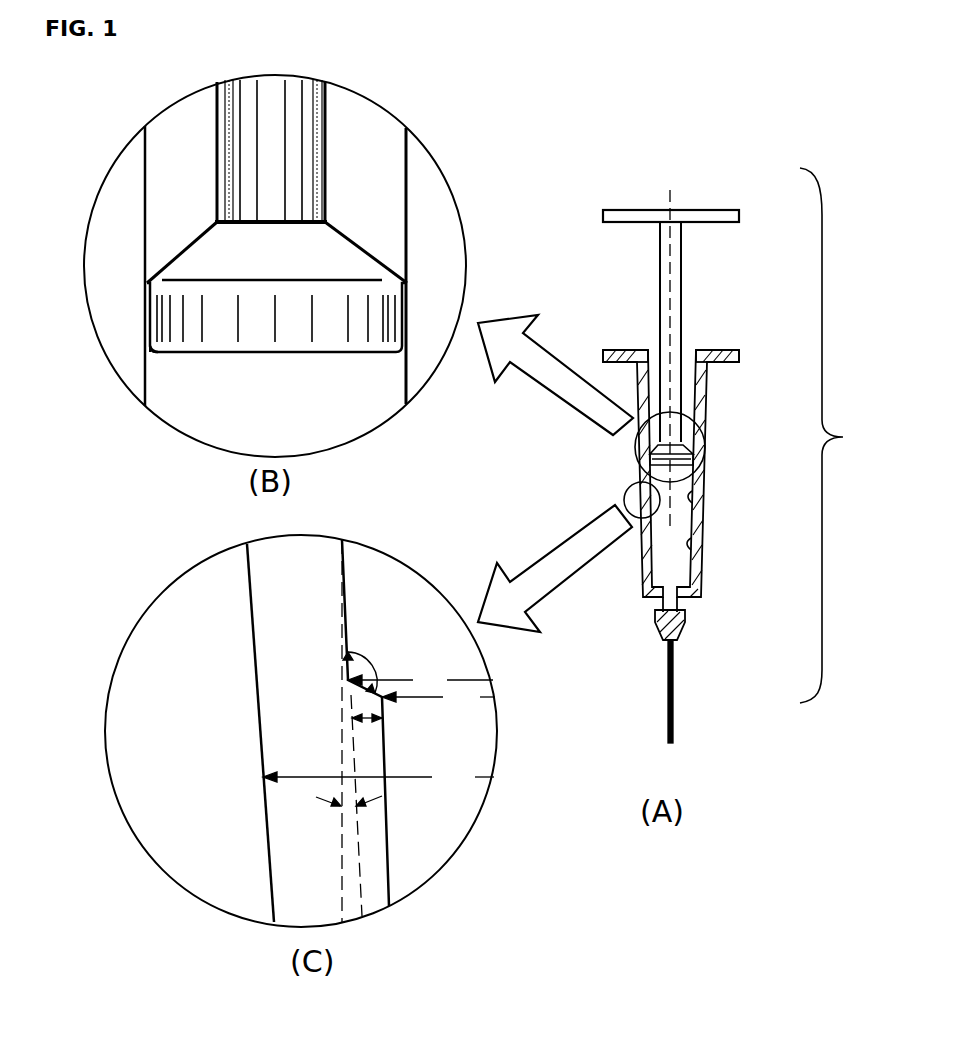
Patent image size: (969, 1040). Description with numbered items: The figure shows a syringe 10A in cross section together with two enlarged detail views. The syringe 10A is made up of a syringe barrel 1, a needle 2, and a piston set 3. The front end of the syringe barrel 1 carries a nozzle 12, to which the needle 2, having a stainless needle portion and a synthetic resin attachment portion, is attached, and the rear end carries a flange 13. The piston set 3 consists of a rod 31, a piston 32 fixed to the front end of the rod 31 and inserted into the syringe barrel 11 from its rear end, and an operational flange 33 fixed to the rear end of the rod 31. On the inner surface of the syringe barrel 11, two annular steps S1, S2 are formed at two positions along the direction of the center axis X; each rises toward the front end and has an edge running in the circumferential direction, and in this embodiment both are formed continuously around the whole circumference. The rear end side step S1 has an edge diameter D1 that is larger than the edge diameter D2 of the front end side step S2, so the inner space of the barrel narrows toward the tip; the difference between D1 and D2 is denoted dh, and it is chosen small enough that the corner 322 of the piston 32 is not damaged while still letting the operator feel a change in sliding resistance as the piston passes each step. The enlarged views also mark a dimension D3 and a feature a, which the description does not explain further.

The syringe barrel 1 is at (479, 524).
The needle 2 is at (674, 692).
The piston set 3 is at (469, 282).
The syringe 10A is at (846, 435).
The syringe barrel 11 is at (698, 400).
The nozzle 12 is at (686, 604).
The flange 13 is at (622, 350).
The rod 31 is at (681, 306).
The piston 32 is at (688, 458).
The operational flange 33 is at (624, 214).
The corner of the piston 322 is at (155, 358).
The gasket corner a is at (160, 350).
The rear end side step S1 is at (700, 506).
The front end side step S2 is at (698, 552).
The center axis X is at (347, 612).
The diameter of the edge of the rear end side step D1 is at (420, 682).
The diameter of the edge of the front end side step D2 is at (438, 700).
The outer diameter D3 is at (378, 780).
The variation in height dh is at (368, 722).